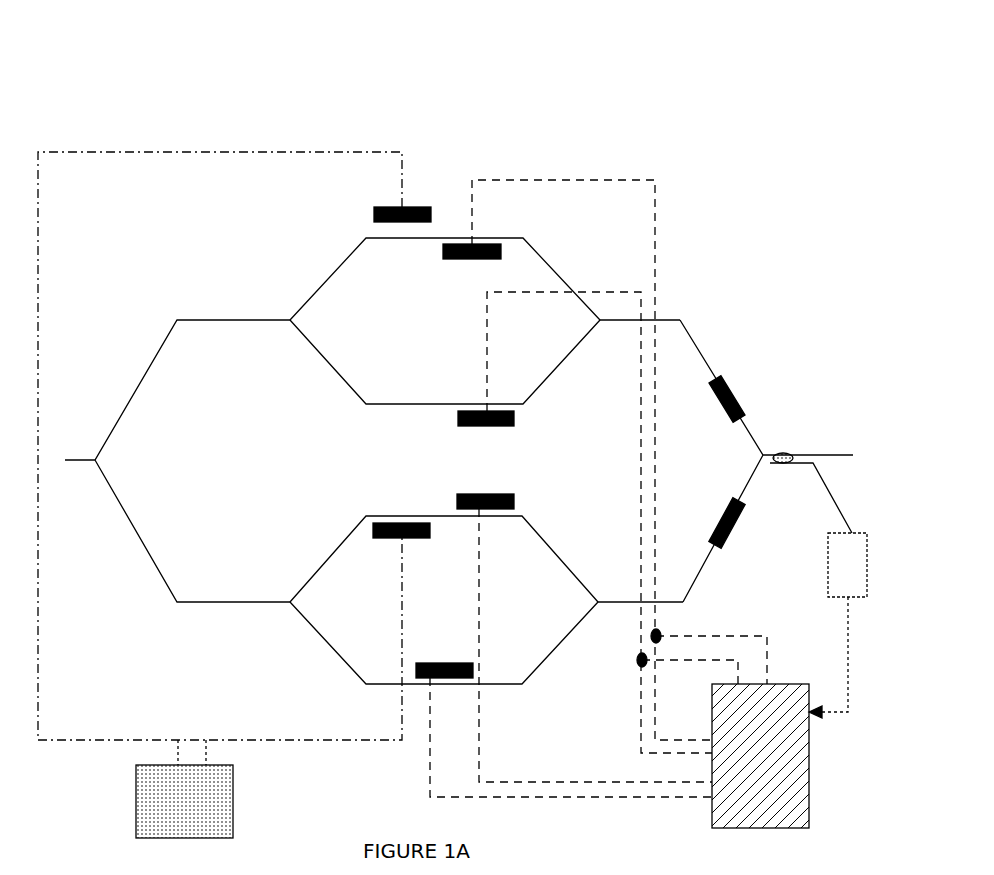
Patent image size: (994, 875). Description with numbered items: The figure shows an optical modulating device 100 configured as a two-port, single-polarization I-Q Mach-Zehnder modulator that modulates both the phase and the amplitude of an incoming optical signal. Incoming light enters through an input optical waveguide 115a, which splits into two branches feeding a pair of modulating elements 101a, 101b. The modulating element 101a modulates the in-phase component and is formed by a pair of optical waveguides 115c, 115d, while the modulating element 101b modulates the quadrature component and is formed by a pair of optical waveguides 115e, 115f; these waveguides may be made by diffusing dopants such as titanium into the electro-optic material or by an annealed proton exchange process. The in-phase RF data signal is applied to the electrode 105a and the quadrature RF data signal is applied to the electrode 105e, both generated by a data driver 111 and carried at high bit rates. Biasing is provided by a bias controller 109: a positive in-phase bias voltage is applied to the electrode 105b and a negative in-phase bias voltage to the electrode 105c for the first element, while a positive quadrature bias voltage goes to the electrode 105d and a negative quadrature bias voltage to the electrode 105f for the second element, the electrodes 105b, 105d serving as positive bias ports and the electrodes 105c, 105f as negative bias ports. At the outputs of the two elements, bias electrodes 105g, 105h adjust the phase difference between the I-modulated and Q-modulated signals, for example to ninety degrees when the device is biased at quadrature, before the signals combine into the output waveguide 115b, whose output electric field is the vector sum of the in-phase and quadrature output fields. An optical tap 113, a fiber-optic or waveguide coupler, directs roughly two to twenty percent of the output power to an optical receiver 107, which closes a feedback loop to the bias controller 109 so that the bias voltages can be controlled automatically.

The optical modulating device 100 is at (386, 98).
The modulating element 101a is at (326, 224).
The modulating element 101b is at (284, 650).
The electrode 105a is at (417, 205).
The electrode 105b is at (485, 243).
The electrode 105c is at (497, 427).
The electrode 105d is at (488, 492).
The electrode 105e is at (400, 537).
The electrode 105f is at (458, 663).
The bias electrode 105g is at (737, 400).
The bias electrode 105h is at (730, 540).
The optical receiver 107 is at (827, 558).
The bias controller 109 is at (738, 828).
The data driver 111 is at (233, 810).
The optical tap 113 is at (777, 463).
The input optical waveguide 115a is at (80, 462).
The output optical waveguide 115b is at (823, 452).
The optical waveguide 115c is at (330, 278).
The optical waveguide 115d is at (338, 370).
The optical waveguide 115e is at (323, 565).
The optical waveguide 115f is at (343, 655).